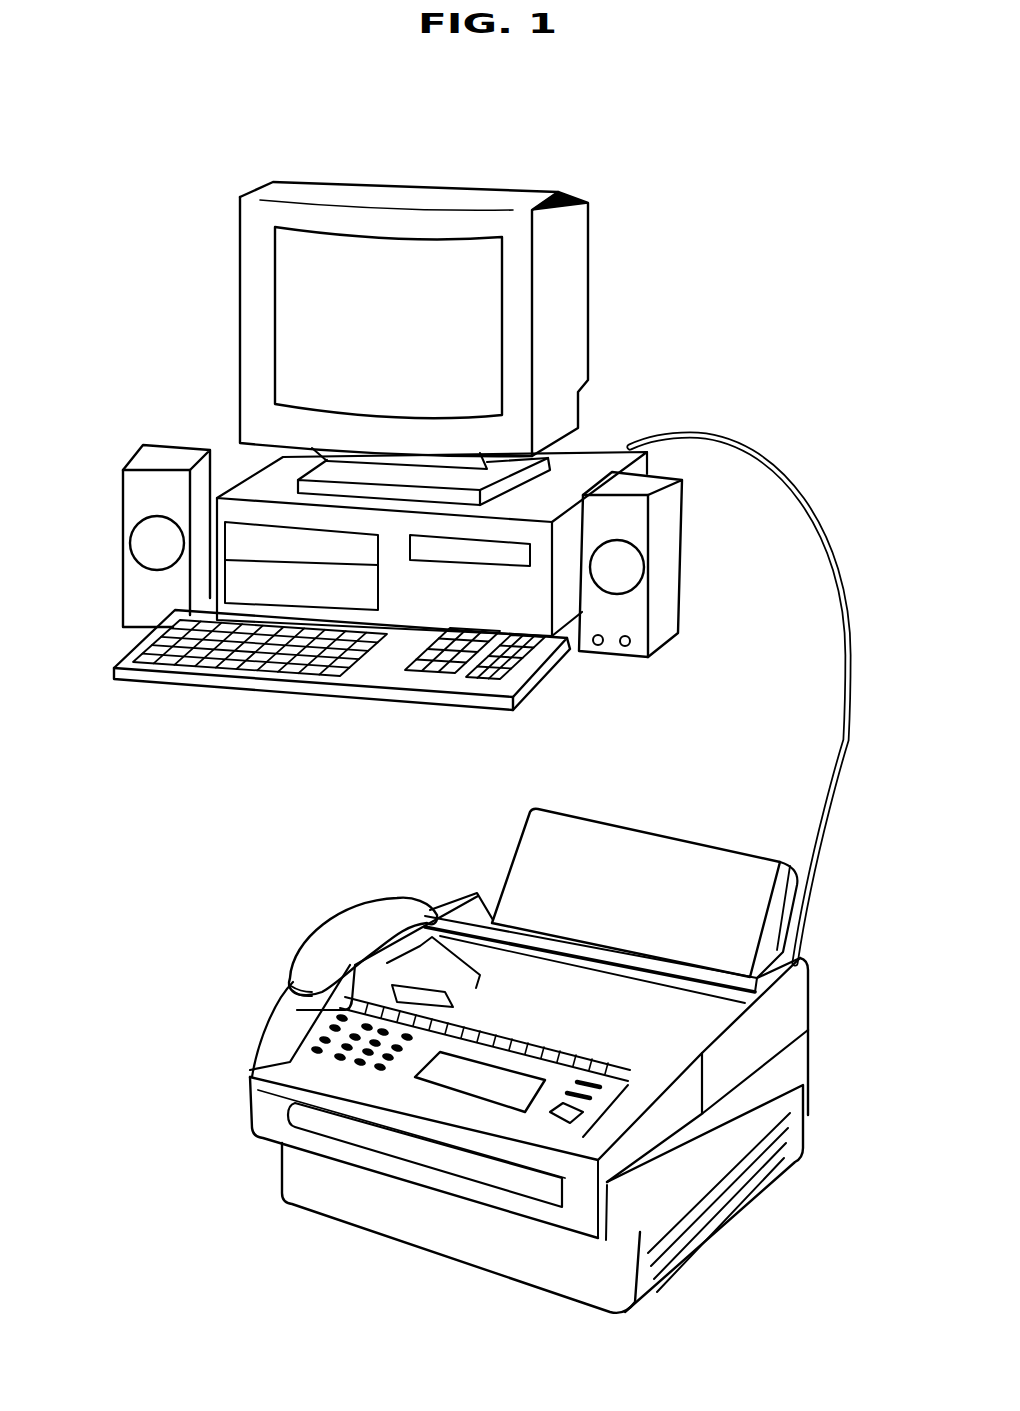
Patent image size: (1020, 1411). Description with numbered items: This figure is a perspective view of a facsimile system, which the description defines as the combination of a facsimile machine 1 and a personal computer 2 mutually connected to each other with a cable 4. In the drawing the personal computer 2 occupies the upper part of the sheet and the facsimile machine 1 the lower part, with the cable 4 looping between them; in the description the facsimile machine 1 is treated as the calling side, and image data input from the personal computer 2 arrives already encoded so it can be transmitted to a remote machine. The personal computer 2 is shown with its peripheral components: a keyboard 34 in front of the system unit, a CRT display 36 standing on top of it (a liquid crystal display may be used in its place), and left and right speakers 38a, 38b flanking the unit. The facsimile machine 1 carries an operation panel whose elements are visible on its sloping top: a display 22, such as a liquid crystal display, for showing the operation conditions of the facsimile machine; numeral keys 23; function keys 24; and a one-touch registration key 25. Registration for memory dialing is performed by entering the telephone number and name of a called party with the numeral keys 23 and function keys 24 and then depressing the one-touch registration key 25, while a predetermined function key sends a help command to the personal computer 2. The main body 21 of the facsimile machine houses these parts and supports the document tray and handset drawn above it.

The facsimile machine 1 is at (493, 1048).
The personal computer 2 is at (591, 446).
The cable 4 is at (829, 588).
The main body 21 is at (292, 1062).
The display 22 is at (500, 1110).
The numeral keys 23 is at (390, 1068).
The function keys 24 is at (587, 1083).
The one-touch registration key 25 is at (300, 1009).
The keyboard 34 is at (298, 678).
The CRT display 36 is at (470, 222).
The left speaker 38a is at (160, 452).
The right speaker 38b is at (672, 563).